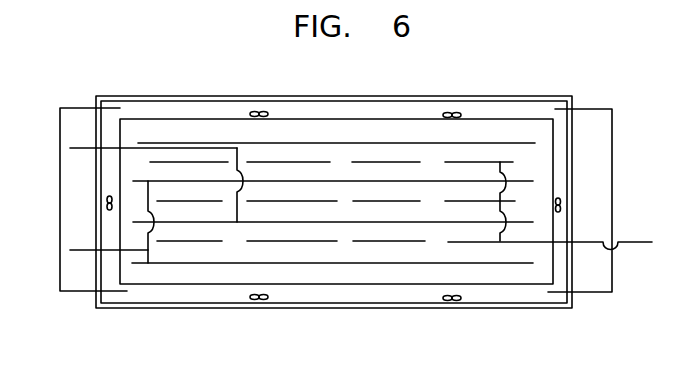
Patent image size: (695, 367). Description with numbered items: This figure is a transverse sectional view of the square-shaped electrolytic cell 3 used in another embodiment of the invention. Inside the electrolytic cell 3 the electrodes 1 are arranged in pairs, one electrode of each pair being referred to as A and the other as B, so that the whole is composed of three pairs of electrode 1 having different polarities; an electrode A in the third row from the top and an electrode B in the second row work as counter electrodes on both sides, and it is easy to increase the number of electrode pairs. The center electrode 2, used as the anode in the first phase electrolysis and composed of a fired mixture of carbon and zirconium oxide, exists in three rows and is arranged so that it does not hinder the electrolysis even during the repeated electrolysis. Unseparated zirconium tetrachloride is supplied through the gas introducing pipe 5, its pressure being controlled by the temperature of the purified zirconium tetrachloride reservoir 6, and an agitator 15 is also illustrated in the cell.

The electrode 1 is at (327, 145).
The center electrode 2 is at (633, 245).
The electrolytic cell 3 is at (473, 97).
The gas introducing pipe 5 is at (158, 113).
The purified zirconium tetrachloride reservoir 6 is at (60, 199).
The agitator 15 is at (458, 305).
The electrode A is at (80, 148).
The electrode B is at (80, 250).